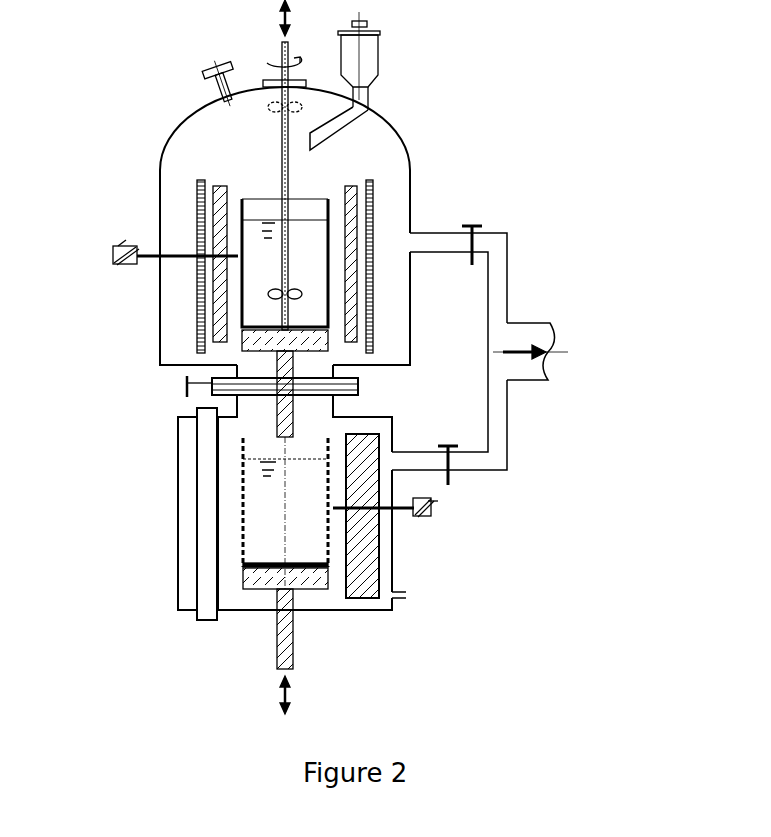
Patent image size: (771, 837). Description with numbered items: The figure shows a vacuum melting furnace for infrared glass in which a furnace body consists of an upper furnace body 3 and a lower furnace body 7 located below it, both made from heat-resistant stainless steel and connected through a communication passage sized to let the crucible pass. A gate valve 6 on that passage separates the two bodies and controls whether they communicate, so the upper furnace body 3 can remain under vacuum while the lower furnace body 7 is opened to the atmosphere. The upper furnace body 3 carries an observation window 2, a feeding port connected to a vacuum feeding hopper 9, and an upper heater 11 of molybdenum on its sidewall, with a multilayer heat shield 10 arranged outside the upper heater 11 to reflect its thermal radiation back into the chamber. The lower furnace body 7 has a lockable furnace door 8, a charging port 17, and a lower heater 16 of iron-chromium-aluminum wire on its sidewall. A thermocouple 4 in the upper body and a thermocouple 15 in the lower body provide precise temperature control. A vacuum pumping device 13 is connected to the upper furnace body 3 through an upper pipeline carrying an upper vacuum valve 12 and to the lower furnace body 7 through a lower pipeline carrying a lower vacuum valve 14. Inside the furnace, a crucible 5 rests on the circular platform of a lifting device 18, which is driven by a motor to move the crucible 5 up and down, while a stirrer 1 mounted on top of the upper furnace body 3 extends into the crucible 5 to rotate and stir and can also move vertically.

The stirrer 1 is at (285, 50).
The observation window 2 is at (225, 93).
The upper furnace body 3 is at (165, 143).
The thermocouple 4 is at (115, 258).
The crucible 5 is at (256, 285).
The gate valve 6 is at (215, 383).
The lower furnace body 7 is at (225, 437).
The furnace door 8 is at (185, 505).
The vacuum feeding hopper 9 is at (372, 50).
The heat shield 10 is at (369, 185).
The upper heater 11 is at (352, 215).
The upper vacuum valve 12 is at (475, 241).
The vacuum pumping device 13 is at (530, 335).
The lower vacuum valve 14 is at (451, 463).
The thermocouple 15 is at (420, 510).
The lower heater 16 is at (362, 549).
The charging port 17 is at (404, 594).
The lifting device 18 is at (285, 632).